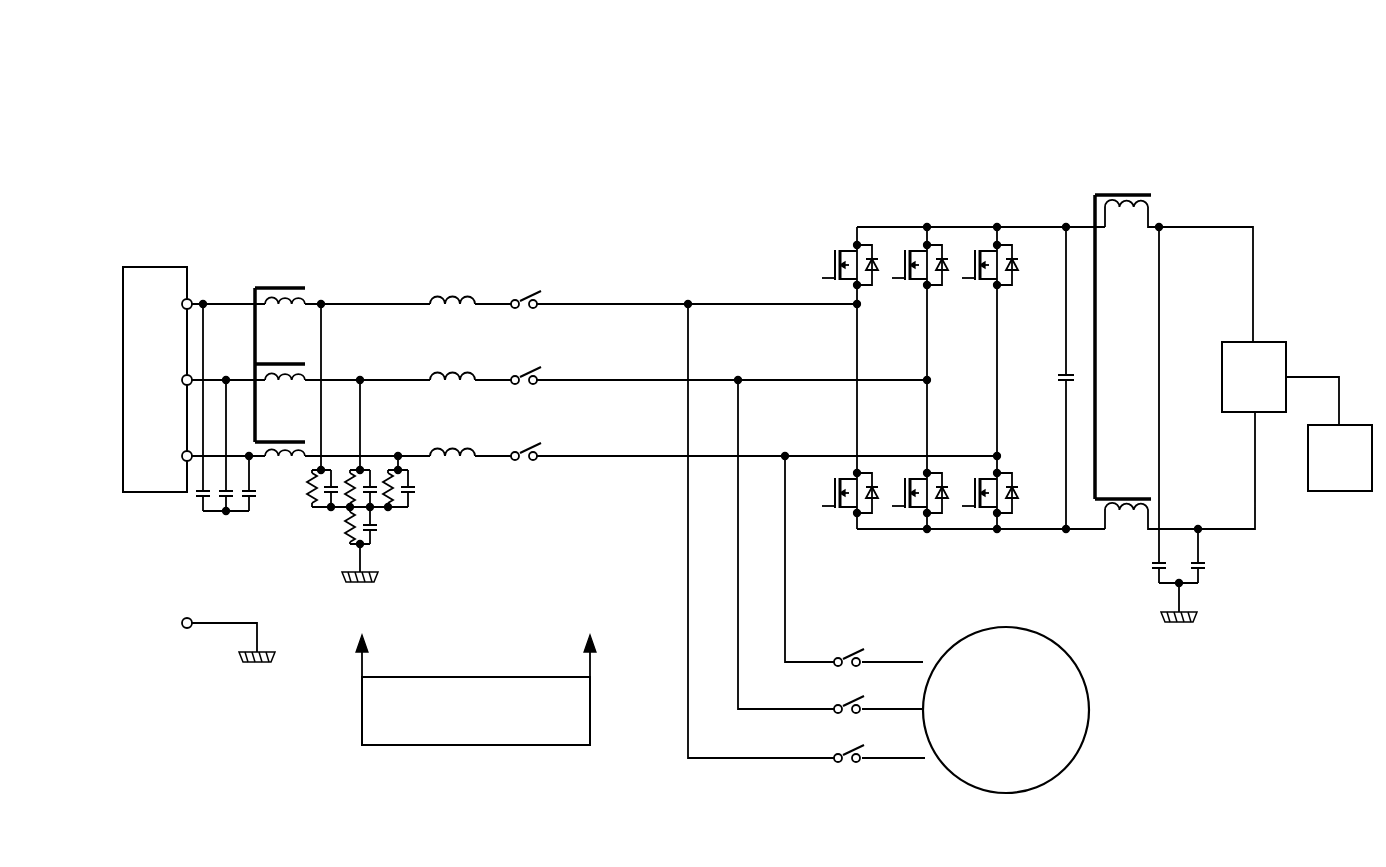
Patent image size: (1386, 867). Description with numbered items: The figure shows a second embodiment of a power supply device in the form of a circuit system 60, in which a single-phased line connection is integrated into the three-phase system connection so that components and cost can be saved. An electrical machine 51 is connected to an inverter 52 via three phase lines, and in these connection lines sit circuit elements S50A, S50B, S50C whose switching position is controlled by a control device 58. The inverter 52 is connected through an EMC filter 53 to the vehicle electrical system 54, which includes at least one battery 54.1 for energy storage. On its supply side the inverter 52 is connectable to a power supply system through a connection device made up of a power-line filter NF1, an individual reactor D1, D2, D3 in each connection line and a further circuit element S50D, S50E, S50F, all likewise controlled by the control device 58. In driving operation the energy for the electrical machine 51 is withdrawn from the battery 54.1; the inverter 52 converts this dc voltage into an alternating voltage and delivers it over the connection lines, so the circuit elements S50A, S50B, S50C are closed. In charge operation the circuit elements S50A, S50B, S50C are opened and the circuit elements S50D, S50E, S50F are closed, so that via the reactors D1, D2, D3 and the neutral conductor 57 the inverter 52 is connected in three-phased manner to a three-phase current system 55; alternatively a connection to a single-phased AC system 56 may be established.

The three-phase current system 55 is at (156, 347).
The single-phased AC system 56 is at (157, 267).
The power-line filter NF1 is at (277, 272).
The reactor D1 is at (453, 298).
The reactor D2 is at (453, 374).
The reactor D3 is at (453, 450).
The circuit element S50D is at (520, 297).
The circuit element S50E is at (520, 373).
The circuit element S50F is at (520, 449).
The circuit element S50A is at (841, 656).
The circuit element S50B is at (848, 703).
The circuit element S50C is at (848, 749).
The inverter 52 is at (931, 193).
The EMC filter 53 is at (1141, 390).
The vehicle electrical system 54 is at (1266, 342).
The battery 54.1 is at (1338, 494).
The electrical machine 51 is at (1005, 640).
The neutral conductor 57 is at (208, 626).
The control device 58 is at (578, 722).
The circuit system 60 is at (1187, 718).